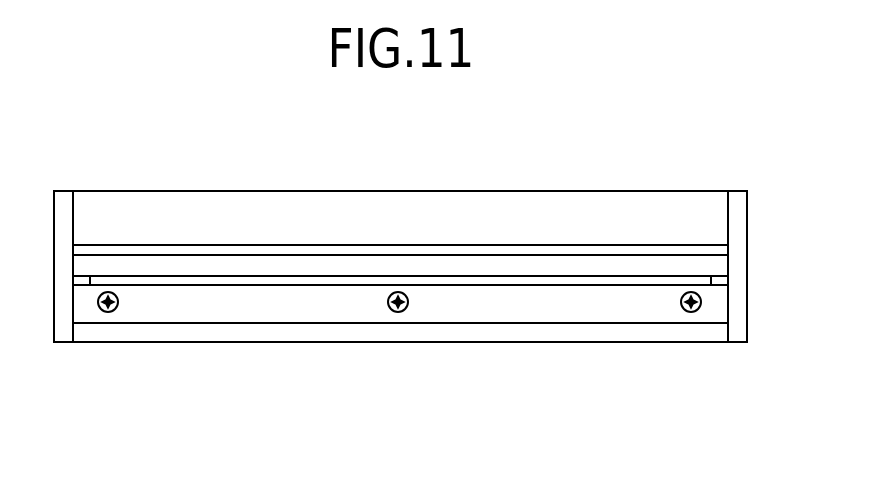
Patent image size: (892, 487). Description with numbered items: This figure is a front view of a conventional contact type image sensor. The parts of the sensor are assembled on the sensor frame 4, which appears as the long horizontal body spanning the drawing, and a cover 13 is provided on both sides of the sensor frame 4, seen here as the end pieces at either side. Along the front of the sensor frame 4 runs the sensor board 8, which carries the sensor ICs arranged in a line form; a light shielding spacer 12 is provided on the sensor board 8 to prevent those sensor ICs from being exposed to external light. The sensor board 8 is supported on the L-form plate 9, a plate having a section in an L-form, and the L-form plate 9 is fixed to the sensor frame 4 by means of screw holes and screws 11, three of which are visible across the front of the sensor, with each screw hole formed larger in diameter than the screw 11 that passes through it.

The sensor frame 4 is at (613, 190).
The sensor board 8 is at (332, 280).
The L-form plate 9 is at (252, 305).
The screw 11 is at (115, 310).
The light shielding spacer 12 is at (423, 262).
The cover 13 is at (742, 190).